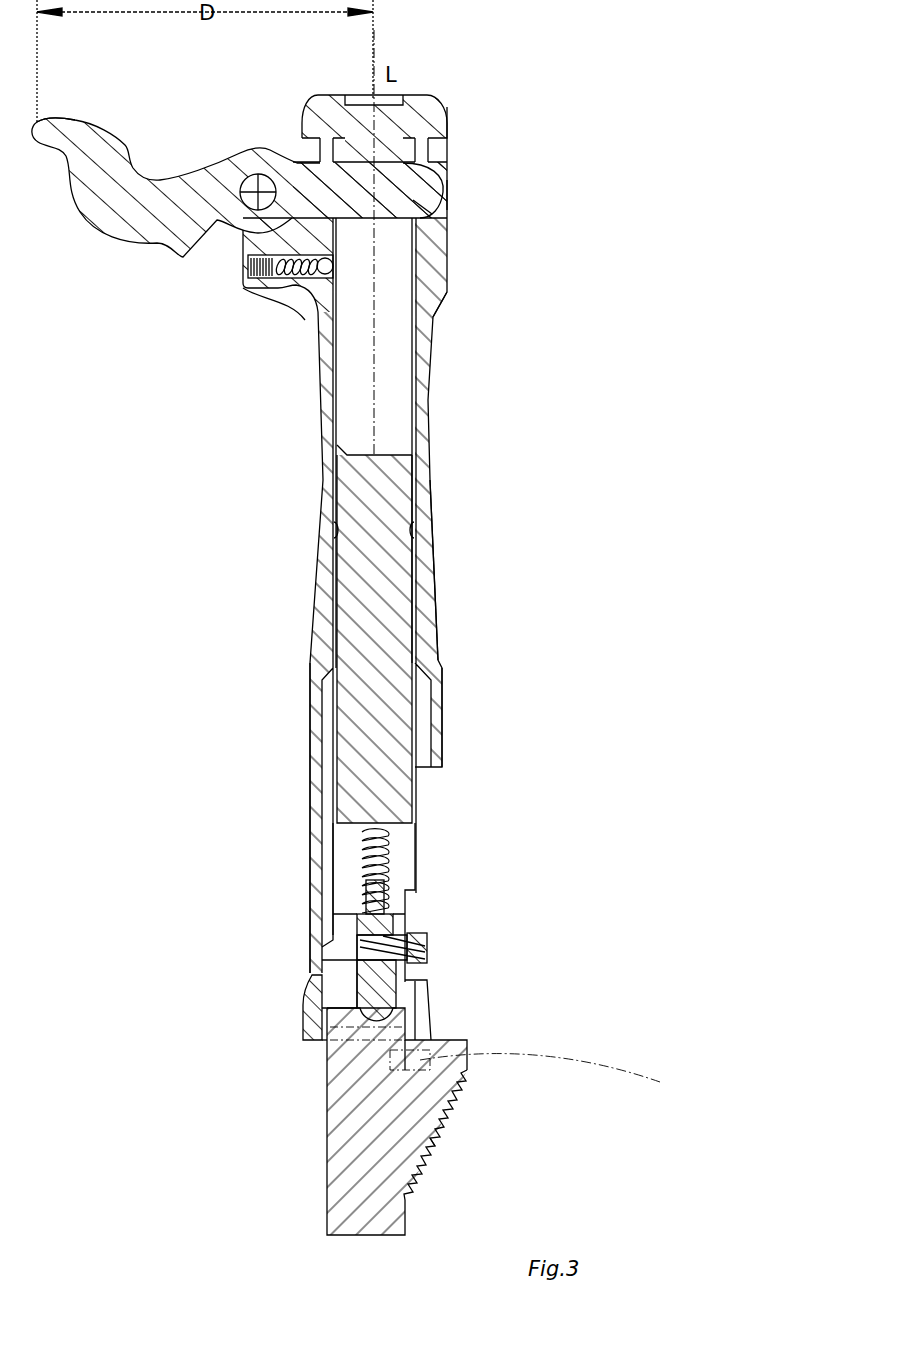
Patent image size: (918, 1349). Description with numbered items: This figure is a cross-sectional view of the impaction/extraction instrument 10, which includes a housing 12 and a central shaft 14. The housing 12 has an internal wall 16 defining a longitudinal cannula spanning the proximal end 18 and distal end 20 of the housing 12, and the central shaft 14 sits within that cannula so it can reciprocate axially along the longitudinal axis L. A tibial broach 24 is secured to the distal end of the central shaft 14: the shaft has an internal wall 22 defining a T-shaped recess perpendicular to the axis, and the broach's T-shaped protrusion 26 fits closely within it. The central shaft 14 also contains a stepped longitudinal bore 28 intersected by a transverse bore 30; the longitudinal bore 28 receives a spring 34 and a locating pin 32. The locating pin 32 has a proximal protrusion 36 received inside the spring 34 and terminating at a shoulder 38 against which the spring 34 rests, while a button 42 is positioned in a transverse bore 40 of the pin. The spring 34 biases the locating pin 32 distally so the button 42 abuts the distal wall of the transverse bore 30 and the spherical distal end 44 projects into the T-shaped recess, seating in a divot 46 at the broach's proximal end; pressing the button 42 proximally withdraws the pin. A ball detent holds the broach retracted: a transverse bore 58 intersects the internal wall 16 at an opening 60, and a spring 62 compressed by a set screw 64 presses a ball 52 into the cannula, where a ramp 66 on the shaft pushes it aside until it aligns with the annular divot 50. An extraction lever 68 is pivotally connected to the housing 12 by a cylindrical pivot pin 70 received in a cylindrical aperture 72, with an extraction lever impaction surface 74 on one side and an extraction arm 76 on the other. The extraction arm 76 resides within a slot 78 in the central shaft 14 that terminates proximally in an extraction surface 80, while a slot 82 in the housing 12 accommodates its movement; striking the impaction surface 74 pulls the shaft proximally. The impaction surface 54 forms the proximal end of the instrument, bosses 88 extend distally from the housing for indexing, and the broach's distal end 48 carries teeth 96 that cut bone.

The impaction/extraction instrument 10 is at (520, 560).
The housing 12 is at (432, 622).
The central shaft 14 is at (392, 805).
The internal wall 16 is at (420, 380).
The proximal end 18 is at (470, 141).
The distal end 20 is at (300, 1040).
The internal wall 22 is at (303, 1012).
The tibial broach 24 is at (447, 1120).
The T-shaped protrusion 26 is at (430, 1012).
The longitudinal bore 28 is at (362, 980).
The transverse bore 30 is at (408, 920).
The locating pin 32 is at (396, 986).
The spring 34 is at (392, 845).
The proximal protrusion 36 is at (366, 872).
The shoulder 38 is at (356, 916).
The transverse bore 40 is at (428, 936).
The button 42 is at (398, 945).
The spherical distal end 44 is at (380, 1025).
The divot 46 is at (340, 1058).
The distal end 48 is at (310, 1228).
The divot 50 is at (331, 530).
The ball 52 is at (318, 300).
The impaction surface 54 is at (432, 95).
The transverse bore 58 is at (292, 280).
The opening 60 is at (335, 264).
The spring 62 is at (250, 262).
The set screw 64 is at (250, 280).
The ramp 66 is at (346, 455).
The extraction lever 68 is at (192, 178).
The cylindrical pivot pin 70 is at (265, 180).
The cylindrical aperture 72 is at (254, 182).
The extraction lever impaction surface 74 is at (75, 120).
The extraction arm 76 is at (413, 202).
The slot 78 is at (407, 313).
The extraction surface 80 is at (433, 178).
The slot 82 is at (448, 200).
The bosses 88 is at (510, 1062).
The teeth 96 is at (447, 1142).